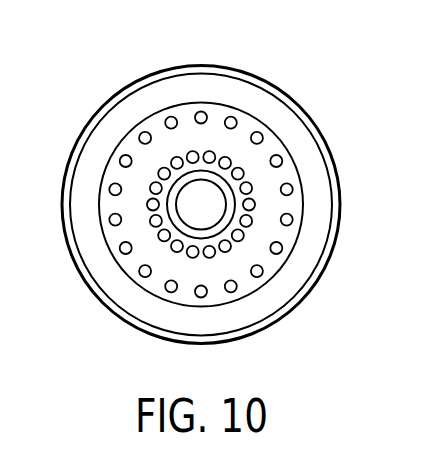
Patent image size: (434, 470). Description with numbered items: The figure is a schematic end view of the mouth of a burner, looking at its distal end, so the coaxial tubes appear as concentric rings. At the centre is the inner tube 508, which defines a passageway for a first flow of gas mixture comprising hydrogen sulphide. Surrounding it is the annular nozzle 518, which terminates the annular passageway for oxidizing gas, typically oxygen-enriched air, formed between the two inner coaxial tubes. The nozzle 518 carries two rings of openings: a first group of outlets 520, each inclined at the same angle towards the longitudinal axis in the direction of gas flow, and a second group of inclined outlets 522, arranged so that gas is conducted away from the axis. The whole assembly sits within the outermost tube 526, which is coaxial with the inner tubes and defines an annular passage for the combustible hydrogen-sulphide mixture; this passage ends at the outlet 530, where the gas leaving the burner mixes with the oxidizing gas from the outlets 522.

The inner tube 508 is at (174, 192).
The annular nozzle 518 is at (147, 250).
The first group of outlets 520 is at (234, 169).
The second group of inclined outlets 522 is at (197, 112).
The outermost tube 526 is at (290, 93).
The outlet 530 is at (255, 98).